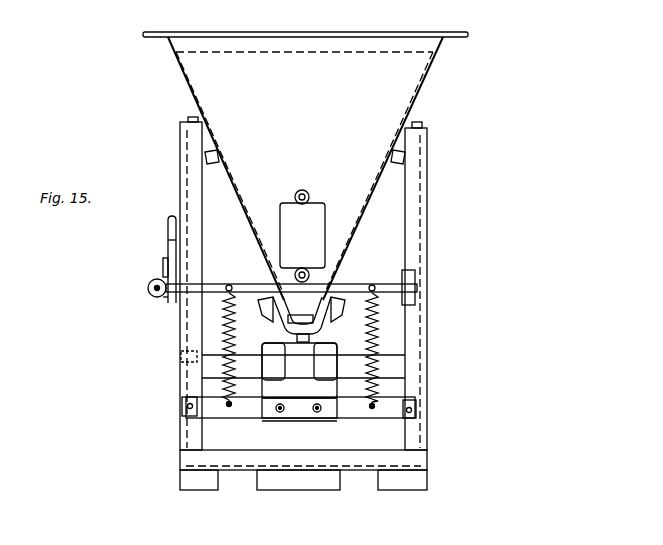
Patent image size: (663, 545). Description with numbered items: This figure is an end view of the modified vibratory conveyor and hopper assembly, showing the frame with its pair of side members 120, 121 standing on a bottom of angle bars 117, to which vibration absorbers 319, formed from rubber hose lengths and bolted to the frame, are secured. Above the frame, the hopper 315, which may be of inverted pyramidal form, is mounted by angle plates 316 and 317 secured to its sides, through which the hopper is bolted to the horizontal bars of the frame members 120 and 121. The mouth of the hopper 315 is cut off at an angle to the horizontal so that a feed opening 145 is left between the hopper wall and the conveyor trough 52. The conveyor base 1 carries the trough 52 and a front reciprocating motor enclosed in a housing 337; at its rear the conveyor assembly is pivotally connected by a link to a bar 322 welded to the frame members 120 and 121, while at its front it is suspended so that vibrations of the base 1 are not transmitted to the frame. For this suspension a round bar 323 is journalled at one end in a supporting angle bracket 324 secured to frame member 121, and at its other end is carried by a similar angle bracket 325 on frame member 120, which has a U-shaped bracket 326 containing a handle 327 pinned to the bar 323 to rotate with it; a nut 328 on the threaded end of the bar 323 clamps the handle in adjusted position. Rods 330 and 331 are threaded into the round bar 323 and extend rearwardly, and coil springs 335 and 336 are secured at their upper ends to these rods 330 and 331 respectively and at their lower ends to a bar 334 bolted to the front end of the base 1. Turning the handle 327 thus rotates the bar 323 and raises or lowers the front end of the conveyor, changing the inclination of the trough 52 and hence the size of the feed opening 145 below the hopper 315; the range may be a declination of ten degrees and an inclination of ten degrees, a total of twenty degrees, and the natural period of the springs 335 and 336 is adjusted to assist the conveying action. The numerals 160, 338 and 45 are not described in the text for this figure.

The hopper 315 is at (413, 65).
The angle plate 316 is at (205, 137).
The angle plate 317 is at (406, 146).
The frame side member 121 is at (413, 174).
The motor 160 is at (318, 218).
The frame side member 120 is at (188, 203).
The handle 327 is at (172, 241).
The U-shaped bracket 326 is at (166, 267).
The angle bracket 325 is at (150, 288).
The nut 328 is at (164, 298).
The round bar 323 is at (207, 283).
The rod 330 is at (250, 263).
The rod 331 is at (374, 286).
The supporting angle bracket 324 is at (410, 277).
The trough insert 338 is at (303, 318).
The feed opening 145 is at (285, 330).
The conveyor trough 52 is at (330, 329).
The coil spring 335 is at (227, 327).
The coil spring 336 is at (377, 350).
The housing 337 is at (378, 375).
The bar 322 is at (388, 365).
The block 45 is at (312, 344).
The bar 334 is at (245, 405).
The conveyor base 1 is at (312, 418).
The angle bars 117 is at (385, 463).
The vibration absorbers 319 is at (392, 483).